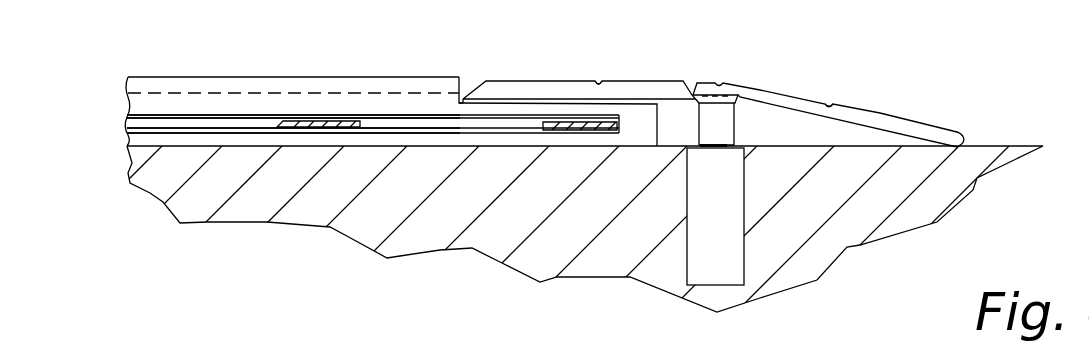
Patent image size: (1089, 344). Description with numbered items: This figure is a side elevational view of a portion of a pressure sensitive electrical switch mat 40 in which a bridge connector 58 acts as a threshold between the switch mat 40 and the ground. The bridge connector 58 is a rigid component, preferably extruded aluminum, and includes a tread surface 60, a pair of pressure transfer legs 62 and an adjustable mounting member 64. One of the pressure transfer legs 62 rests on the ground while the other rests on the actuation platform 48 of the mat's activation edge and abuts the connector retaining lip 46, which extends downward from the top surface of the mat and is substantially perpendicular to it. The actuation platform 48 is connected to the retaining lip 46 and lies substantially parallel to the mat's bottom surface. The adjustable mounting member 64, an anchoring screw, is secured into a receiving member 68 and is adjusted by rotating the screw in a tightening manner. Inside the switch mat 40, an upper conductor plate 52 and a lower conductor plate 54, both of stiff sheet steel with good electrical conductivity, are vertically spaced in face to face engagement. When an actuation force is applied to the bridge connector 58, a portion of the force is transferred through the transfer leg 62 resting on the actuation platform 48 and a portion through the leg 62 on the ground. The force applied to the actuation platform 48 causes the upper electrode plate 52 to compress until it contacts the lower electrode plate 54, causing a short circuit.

The pressure sensitive switch mat 40 is at (222, 74).
The connector retaining lip 46 is at (461, 78).
The actuation platform 48 is at (581, 98).
The upper conductor plate 52 is at (127, 117).
The lower conductor plate 54 is at (127, 130).
The bridge connector 58 is at (895, 101).
The tread surface 60 is at (718, 82).
The pressure transfer legs 62 is at (482, 81).
The adjustable mounting member 64 is at (741, 127).
The receiving member 68 is at (727, 239).